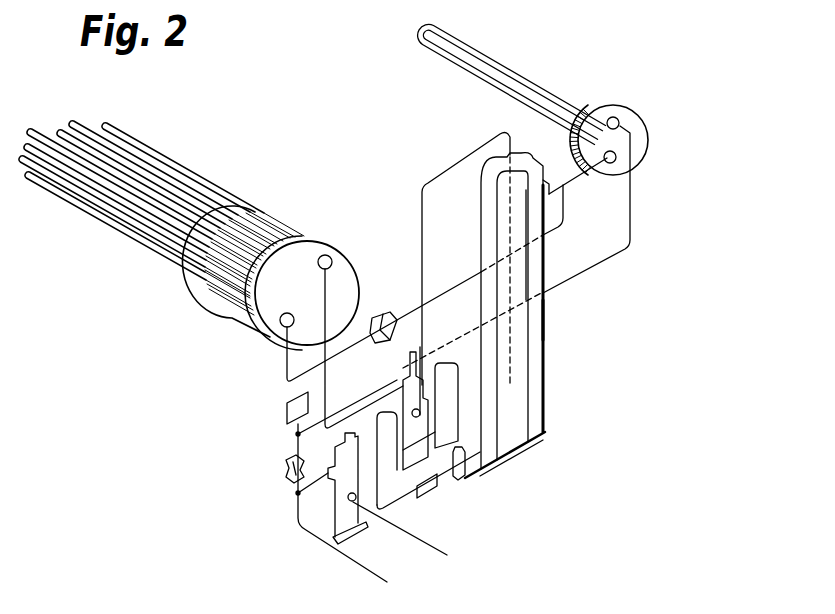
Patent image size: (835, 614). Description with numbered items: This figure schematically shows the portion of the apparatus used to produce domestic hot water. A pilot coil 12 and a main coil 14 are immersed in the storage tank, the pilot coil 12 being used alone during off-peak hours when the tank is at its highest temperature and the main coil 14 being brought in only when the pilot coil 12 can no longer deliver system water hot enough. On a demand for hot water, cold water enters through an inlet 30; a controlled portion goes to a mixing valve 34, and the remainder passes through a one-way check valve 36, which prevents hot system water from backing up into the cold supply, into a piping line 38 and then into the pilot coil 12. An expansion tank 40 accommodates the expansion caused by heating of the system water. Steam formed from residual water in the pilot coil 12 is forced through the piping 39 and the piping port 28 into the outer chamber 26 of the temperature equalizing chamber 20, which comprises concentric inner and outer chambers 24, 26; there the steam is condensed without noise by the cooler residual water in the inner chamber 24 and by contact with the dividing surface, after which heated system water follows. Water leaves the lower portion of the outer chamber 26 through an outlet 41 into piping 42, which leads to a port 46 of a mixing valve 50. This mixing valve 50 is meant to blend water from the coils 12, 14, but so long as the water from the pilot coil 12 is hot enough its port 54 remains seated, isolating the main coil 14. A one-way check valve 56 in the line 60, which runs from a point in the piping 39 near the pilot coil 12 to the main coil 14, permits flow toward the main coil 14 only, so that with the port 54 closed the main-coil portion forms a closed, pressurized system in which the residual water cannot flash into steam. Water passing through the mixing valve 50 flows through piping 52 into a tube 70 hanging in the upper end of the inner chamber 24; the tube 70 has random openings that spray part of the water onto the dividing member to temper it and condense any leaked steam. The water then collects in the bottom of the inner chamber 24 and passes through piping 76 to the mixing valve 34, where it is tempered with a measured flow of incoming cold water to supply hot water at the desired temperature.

The pilot coil 12 is at (628, 116).
The main coil 14 is at (319, 239).
The temperature equalizing chamber 20 is at (550, 300).
The inner chamber 24 is at (530, 347).
The outer chamber 26 is at (546, 378).
The piping port 28 is at (549, 183).
The inlet 30 is at (338, 552).
The mixing valve 34 is at (360, 521).
The check valve 36 is at (285, 466).
The piping line 38 is at (630, 243).
The piping 39 is at (582, 180).
The expansion tank 40 is at (285, 409).
The outlet 41 is at (458, 448).
The piping 42 is at (466, 372).
The port 46 is at (433, 362).
The mixing valve 50 is at (428, 422).
The piping 52 is at (424, 250).
The port 54 is at (397, 408).
The check valve 56 is at (385, 313).
The line 60 is at (342, 352).
The tube 70 is at (509, 196).
The piping 76 is at (441, 488).